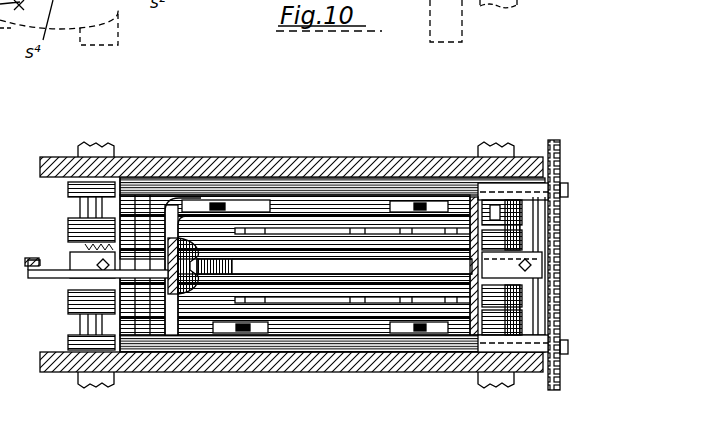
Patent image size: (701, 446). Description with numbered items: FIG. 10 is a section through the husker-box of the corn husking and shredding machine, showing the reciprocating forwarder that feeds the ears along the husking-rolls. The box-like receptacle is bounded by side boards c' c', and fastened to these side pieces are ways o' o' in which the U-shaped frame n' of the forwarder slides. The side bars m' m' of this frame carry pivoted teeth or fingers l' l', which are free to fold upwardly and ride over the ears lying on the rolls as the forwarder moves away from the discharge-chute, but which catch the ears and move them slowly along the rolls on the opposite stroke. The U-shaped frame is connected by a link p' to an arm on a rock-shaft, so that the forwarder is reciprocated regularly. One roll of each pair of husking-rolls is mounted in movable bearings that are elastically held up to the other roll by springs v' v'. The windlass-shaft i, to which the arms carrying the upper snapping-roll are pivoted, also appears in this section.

The side boards c' is at (291, 266).
The teeth or fingers l' is at (315, 268).
The ways o' is at (332, 267).
The side bars m' is at (489, 269).
The springs v' is at (312, 255).
The link p' is at (86, 292).
The U-shaped frame n' is at (173, 303).
The windlass-shaft i is at (334, 266).